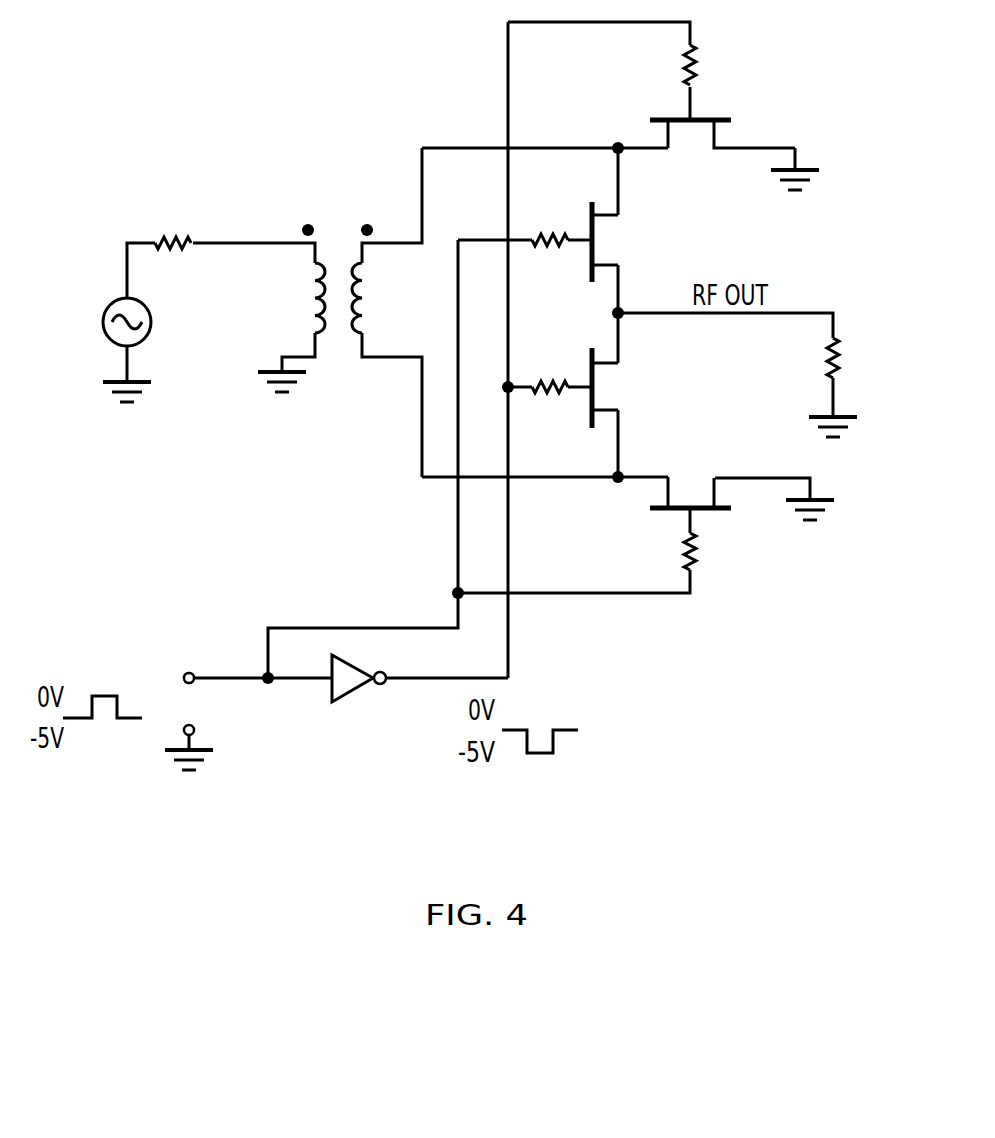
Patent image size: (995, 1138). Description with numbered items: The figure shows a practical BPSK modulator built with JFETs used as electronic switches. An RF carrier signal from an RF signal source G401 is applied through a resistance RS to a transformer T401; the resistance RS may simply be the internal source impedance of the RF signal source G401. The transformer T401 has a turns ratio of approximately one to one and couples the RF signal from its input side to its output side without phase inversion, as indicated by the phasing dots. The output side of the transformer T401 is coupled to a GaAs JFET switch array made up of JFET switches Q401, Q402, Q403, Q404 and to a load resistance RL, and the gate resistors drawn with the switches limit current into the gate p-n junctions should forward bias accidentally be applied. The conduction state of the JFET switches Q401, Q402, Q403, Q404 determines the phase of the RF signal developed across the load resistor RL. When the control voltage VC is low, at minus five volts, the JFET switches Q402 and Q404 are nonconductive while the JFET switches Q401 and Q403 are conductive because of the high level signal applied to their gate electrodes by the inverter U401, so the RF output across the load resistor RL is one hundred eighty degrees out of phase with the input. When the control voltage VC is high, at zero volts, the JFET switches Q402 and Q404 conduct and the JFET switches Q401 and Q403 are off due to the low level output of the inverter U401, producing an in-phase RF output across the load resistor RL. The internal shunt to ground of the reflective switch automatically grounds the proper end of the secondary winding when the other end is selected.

The RF signal source G401 is at (97, 322).
The resistance RS is at (176, 248).
The transformer T401 is at (362, 210).
The JFET switch Q401 is at (711, 117).
The JFET switch Q402 is at (597, 237).
The JFET switch Q403 is at (597, 391).
The JFET switch Q404 is at (689, 506).
The load resistance RL is at (861, 370).
The inverter U401 is at (369, 669).
The control voltage VC is at (169, 697).